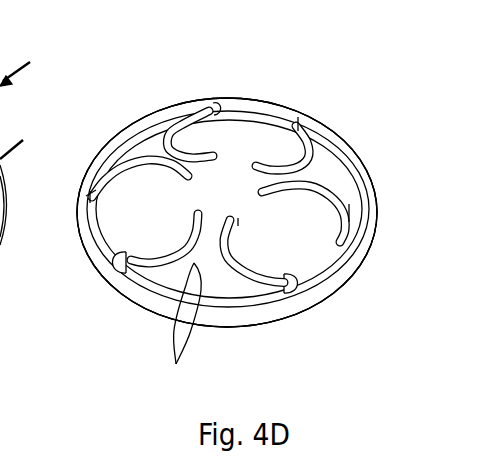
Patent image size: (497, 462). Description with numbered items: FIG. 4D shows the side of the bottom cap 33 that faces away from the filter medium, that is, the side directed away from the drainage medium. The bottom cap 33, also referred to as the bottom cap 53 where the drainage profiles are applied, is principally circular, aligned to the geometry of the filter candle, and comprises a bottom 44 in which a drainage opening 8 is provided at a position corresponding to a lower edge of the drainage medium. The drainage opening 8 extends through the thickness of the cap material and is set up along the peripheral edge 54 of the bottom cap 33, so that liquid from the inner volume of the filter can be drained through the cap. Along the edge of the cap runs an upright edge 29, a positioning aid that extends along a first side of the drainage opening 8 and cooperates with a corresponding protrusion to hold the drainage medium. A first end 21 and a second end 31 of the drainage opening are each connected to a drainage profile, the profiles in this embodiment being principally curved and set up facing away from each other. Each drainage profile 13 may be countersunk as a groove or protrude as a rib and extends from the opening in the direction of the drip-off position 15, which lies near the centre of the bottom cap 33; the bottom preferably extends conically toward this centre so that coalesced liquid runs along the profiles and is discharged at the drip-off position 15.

The bottom cap 33 is at (146, 96).
The upright edge 29 is at (133, 302).
The peripheral edge 54 is at (249, 98).
The bottom cap 53 is at (262, 122).
The first end of the drainage opening 21 is at (211, 110).
The bottom 44 is at (140, 156).
The second end of the drainage opening 31 is at (92, 201).
The drainage opening 8 is at (337, 150).
The drip-off position 15 is at (222, 183).
The drainage profile 13 is at (177, 330).